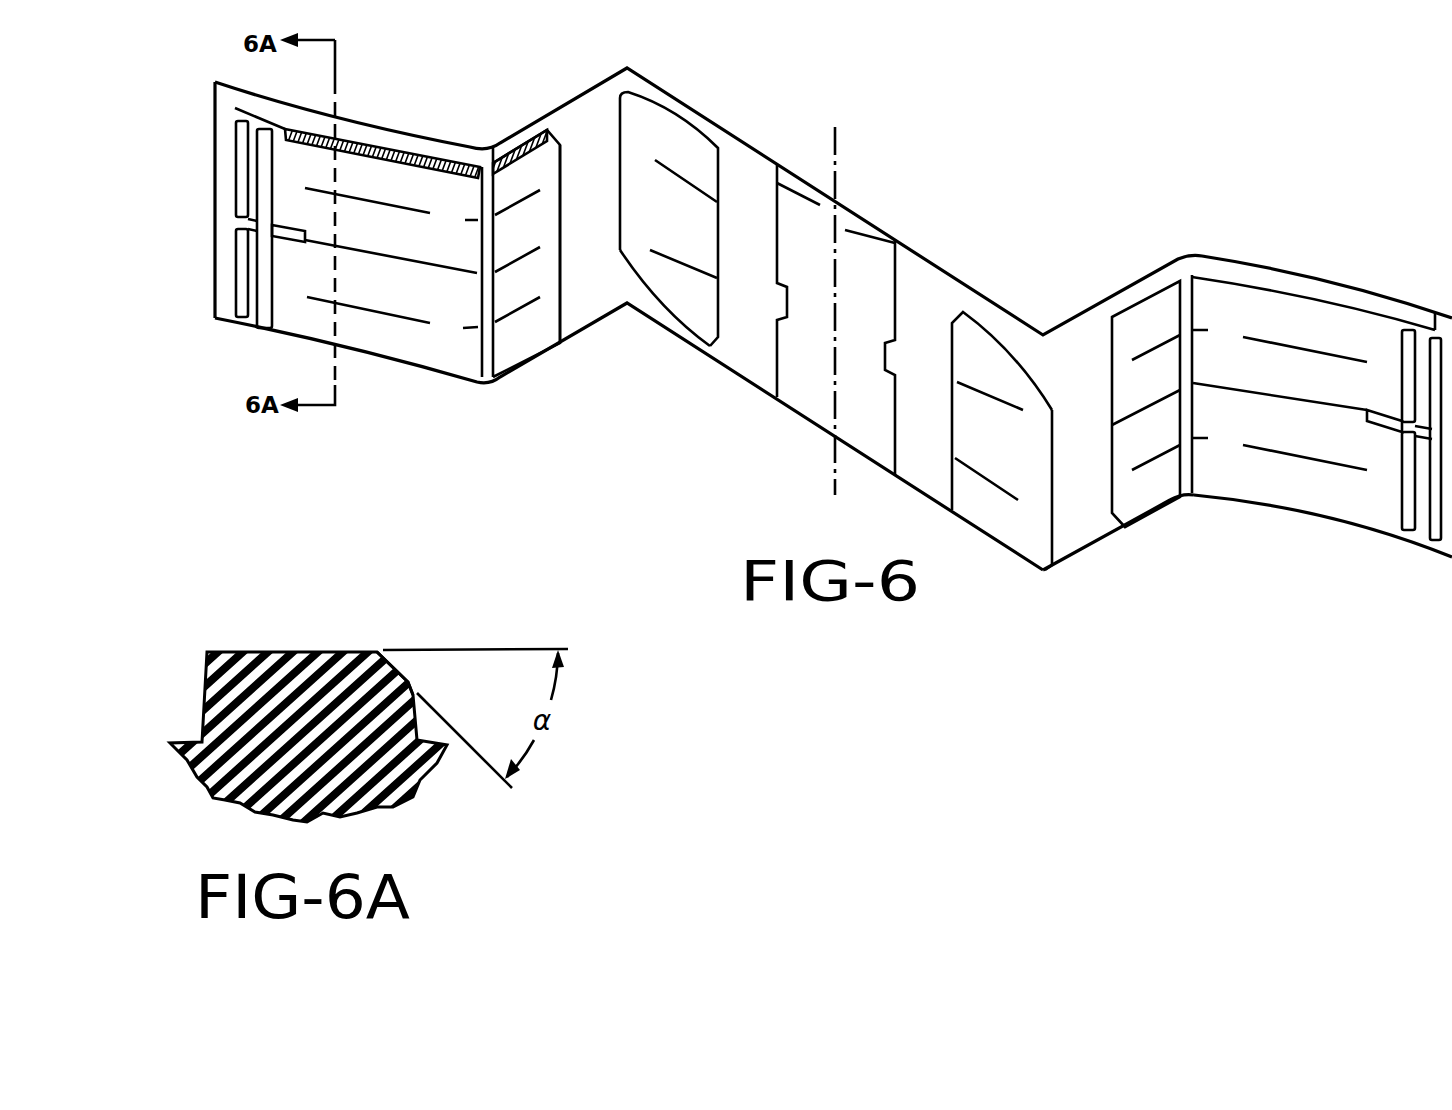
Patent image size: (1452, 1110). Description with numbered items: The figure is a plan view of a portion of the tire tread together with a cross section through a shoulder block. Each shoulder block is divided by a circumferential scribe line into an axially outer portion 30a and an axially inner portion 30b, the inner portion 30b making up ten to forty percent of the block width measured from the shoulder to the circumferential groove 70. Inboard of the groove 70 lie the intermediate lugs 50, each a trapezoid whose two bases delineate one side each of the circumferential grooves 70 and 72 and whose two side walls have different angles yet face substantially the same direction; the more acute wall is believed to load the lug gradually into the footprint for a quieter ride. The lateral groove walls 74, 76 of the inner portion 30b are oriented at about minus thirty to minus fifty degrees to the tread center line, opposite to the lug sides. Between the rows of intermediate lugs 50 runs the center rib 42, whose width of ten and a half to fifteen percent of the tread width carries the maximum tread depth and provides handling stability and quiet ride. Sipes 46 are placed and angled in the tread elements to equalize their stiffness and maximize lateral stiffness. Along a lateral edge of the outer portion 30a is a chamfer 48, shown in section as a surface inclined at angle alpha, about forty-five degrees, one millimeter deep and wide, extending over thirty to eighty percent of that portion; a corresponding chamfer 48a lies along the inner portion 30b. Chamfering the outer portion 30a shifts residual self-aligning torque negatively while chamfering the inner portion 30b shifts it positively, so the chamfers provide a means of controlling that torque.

In FIG. 6, the axially outer portion 30a is at (402, 350).
In FIG. 6A, the axially outer portion 30a is at (300, 660).
In FIG. 6, the axially inner portion 30b is at (533, 327).
In FIG. 6, the center rib 42 is at (802, 230).
In FIG. 6, the sipes 46 is at (676, 175).
In FIG. 6, the chamfer 48 is at (395, 157).
In FIG. 6A, the chamfer 48 is at (397, 673).
In FIG. 6, the beveled edge of second panel 48a is at (520, 147).
In FIG. 6, the intermediate lugs 50 is at (680, 302).
In FIG. 6, the circumferential groove 70 is at (592, 220).
In FIG. 6, the circumferential groove 72 is at (928, 352).
In FIG. 6, the lateral groove wall 74 is at (1150, 294).
In FIG. 6, the lateral groove wall 76 is at (1156, 513).